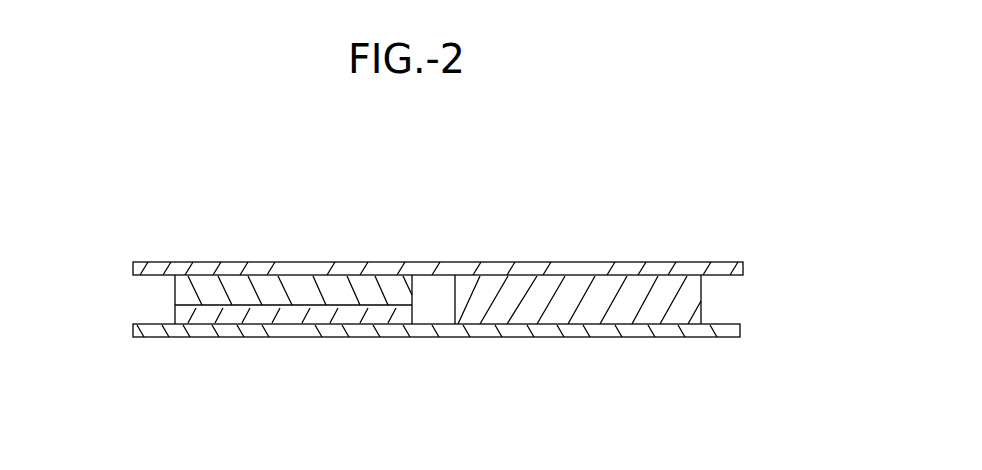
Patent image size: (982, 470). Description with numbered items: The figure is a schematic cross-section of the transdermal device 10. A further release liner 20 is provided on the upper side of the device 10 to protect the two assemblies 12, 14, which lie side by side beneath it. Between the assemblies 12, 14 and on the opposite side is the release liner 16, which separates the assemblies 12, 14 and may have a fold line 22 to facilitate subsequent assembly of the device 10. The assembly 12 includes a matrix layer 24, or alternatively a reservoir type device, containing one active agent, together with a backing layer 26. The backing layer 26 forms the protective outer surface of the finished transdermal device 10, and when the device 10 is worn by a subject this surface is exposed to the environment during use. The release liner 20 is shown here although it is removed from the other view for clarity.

The device 10 is at (158, 192).
The assembly 12 is at (166, 303).
The assembly 14 is at (712, 302).
The release liner 16 is at (283, 339).
The release liner 20 is at (566, 270).
The fold line 22 is at (434, 327).
The matrix layer 24 is at (302, 287).
The backing layer 26 is at (343, 315).